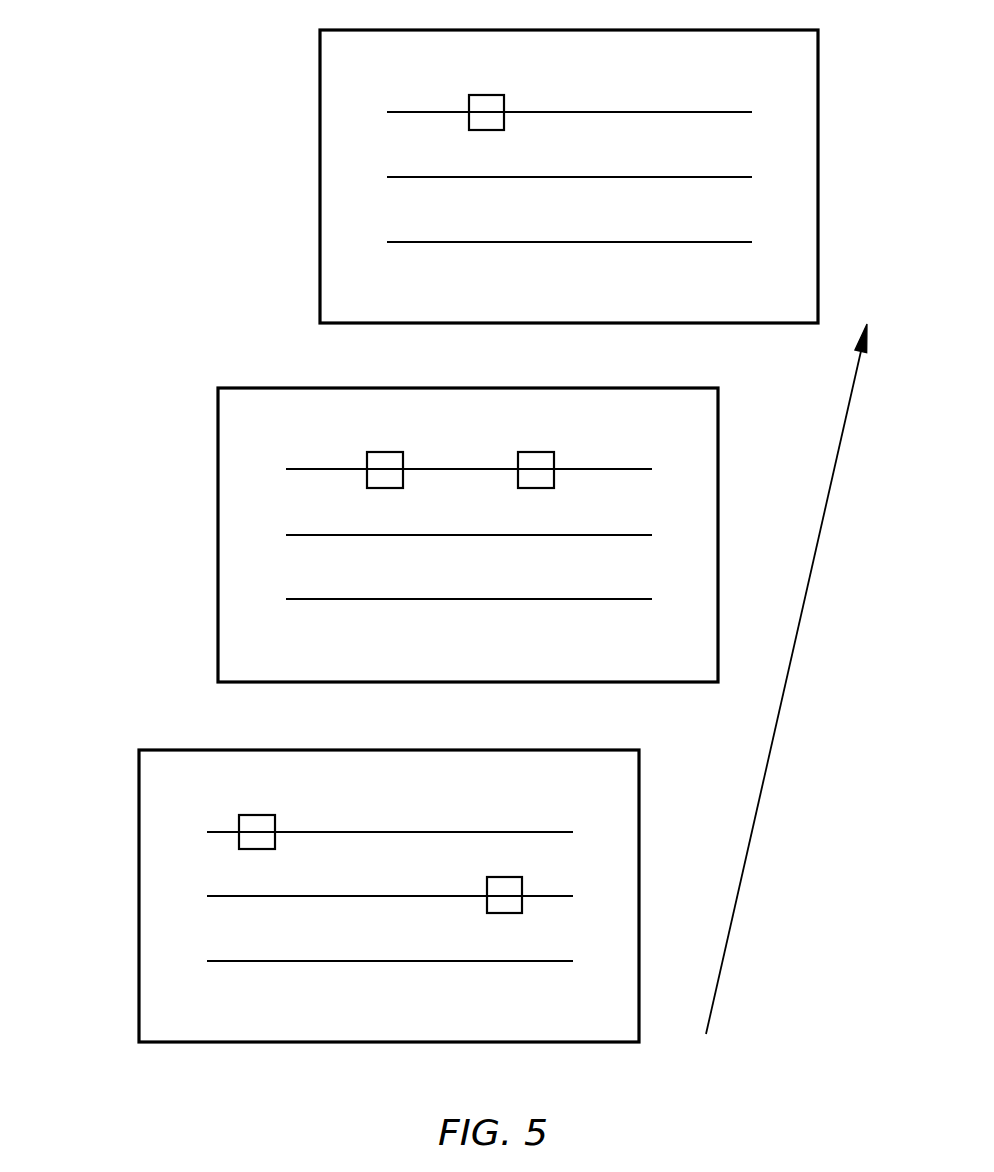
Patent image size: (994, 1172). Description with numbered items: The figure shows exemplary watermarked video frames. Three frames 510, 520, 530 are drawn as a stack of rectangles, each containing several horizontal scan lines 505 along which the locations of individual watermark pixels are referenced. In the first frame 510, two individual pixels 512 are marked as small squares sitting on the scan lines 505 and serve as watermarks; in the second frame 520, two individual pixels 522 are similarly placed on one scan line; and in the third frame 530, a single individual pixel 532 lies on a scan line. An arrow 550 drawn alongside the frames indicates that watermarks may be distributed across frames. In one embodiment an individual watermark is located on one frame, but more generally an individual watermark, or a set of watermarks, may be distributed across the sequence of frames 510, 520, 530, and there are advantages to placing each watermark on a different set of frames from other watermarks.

The horizontal scan lines 505 is at (583, 931).
The frame 510 is at (139, 847).
The individual pixel 512 is at (270, 815).
The frame 520 is at (218, 445).
The individual pixel 522 is at (398, 452).
The frame 530 is at (320, 98).
The individual pixel 532 is at (498, 95).
The arrow 550 is at (768, 765).